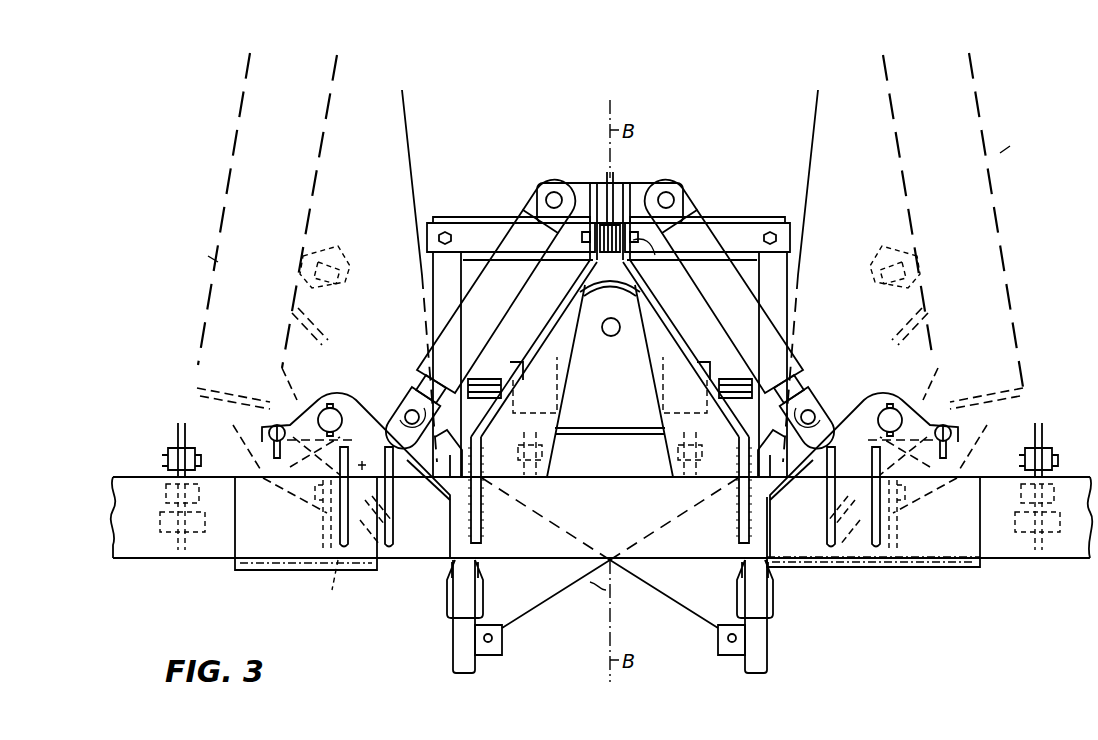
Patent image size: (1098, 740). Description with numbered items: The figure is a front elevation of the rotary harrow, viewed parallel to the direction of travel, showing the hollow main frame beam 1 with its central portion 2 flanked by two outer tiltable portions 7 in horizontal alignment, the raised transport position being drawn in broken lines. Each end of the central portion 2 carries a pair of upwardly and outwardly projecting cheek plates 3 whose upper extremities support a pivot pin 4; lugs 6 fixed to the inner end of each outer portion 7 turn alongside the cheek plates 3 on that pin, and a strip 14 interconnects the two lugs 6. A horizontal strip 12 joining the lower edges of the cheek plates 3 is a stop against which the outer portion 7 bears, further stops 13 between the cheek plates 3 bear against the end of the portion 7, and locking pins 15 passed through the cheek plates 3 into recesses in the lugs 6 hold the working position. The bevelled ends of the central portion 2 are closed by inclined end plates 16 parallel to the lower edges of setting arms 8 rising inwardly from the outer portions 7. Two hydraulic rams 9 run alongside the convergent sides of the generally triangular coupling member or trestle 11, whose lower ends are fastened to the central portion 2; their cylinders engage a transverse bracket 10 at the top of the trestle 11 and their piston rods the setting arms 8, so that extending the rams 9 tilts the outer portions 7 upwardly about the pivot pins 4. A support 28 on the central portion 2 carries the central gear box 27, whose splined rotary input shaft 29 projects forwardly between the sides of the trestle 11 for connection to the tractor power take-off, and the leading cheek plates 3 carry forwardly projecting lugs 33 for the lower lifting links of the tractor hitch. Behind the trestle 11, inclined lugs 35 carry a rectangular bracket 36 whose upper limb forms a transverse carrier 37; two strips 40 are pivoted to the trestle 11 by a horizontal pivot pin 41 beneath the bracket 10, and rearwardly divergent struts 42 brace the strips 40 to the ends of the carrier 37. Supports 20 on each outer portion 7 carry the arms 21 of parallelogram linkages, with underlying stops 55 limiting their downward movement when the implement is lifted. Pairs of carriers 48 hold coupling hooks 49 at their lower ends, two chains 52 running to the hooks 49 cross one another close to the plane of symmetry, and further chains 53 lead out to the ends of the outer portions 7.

The main frame beam 1 is at (112, 480).
The central portion 2 is at (644, 560).
The cheek plates 3 is at (240, 513).
The pivot pins 4 is at (366, 378).
The lugs 6 is at (364, 478).
The outer tiltable portion 7 is at (212, 258).
The setting arm 8 is at (402, 420).
The piston and cylinder assembly or ram 9 is at (418, 368).
The transverse bracket 10 is at (586, 184).
The coupling member or trestle 11 is at (566, 314).
The strip 12 is at (248, 570).
The stops 13 is at (610, 545).
The strip 14 is at (316, 350).
The locking pins 15 is at (268, 430).
The end plates 16 is at (396, 492).
The supports 20 is at (180, 424).
The arms 21 is at (168, 447).
The central gear box 27 is at (642, 420).
The support 28 is at (600, 432).
The rotary input shaft 29 is at (610, 336).
The lugs 33 is at (394, 548).
The lug 35 is at (484, 495).
The bracket 36 is at (798, 274).
The transverse carrier 37 is at (704, 218).
The strips 40 is at (618, 180).
The horizontal pivot pin 41 is at (636, 252).
The struts 42 is at (480, 214).
The carriers 48 is at (484, 583).
The coupling hook 49 is at (455, 650).
The chains 52 is at (584, 597).
The chains 53 is at (406, 158).
The stops 55 is at (1062, 533).